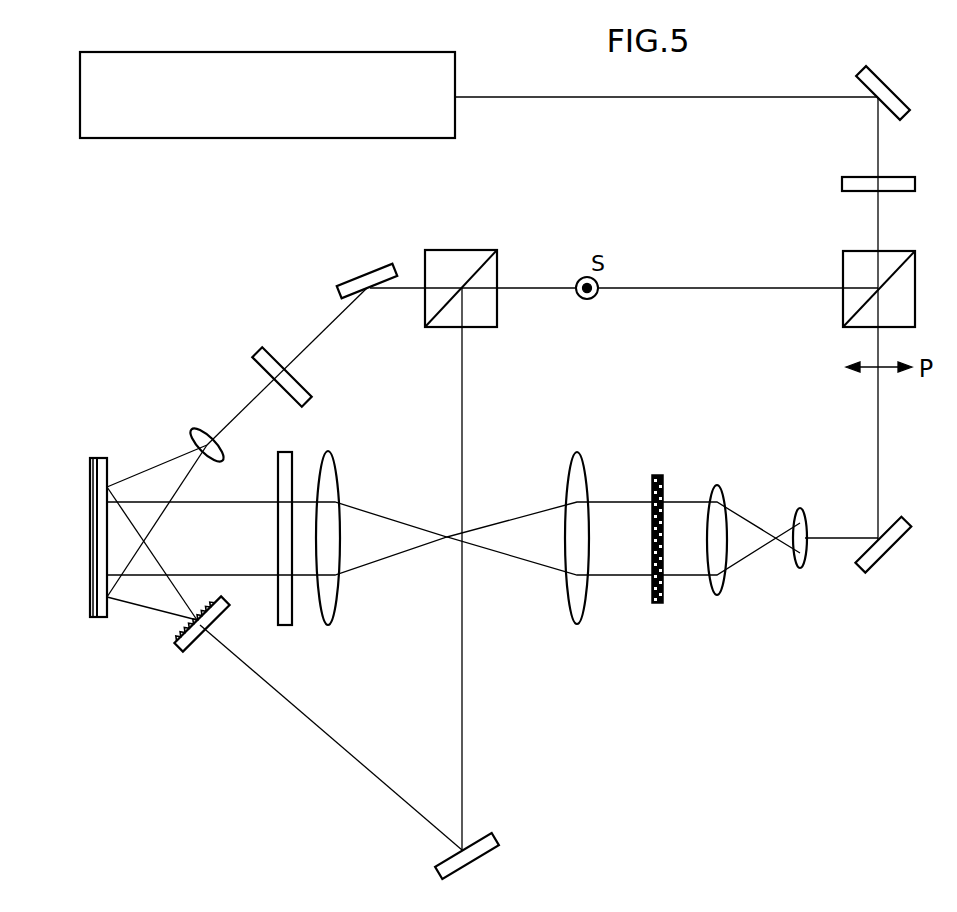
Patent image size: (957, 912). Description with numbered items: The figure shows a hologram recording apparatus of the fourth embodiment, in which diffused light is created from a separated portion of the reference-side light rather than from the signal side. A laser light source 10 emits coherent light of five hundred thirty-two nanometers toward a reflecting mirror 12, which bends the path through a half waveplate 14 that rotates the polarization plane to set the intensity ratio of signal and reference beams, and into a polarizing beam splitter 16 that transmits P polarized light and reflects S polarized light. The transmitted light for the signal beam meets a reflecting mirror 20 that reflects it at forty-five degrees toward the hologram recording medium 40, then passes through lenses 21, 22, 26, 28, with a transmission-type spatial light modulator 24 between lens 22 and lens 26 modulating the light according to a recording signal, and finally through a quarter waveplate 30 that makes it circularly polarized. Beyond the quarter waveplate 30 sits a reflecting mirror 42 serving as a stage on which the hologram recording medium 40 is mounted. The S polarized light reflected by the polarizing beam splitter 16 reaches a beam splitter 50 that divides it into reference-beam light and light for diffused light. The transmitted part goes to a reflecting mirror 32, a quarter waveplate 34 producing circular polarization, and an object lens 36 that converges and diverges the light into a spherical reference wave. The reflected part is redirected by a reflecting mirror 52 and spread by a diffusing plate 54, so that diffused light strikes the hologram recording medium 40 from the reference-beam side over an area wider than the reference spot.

The laser light source 10 is at (283, 52).
The reflecting mirror 12 is at (893, 74).
The half waveplate 14 is at (850, 176).
The polarizing beam splitter 16 is at (911, 250).
The reflecting mirror 20 is at (888, 558).
The lens 21 is at (800, 508).
The lens 22 is at (718, 485).
The spatial light modulator 24 is at (657, 475).
The lens 26 is at (578, 452).
The lens 28 is at (341, 478).
The quarter waveplate 30 is at (286, 452).
The reflecting mirror 32 is at (368, 266).
The quarter waveplate 34 is at (297, 381).
The object lens 36 is at (214, 462).
The hologram recording medium 40 is at (108, 462).
The reflecting mirror 42 is at (90, 531).
The beam splitter 50 is at (489, 249).
The reflecting mirror 52 is at (480, 860).
The diffusing plate 54 is at (190, 652).